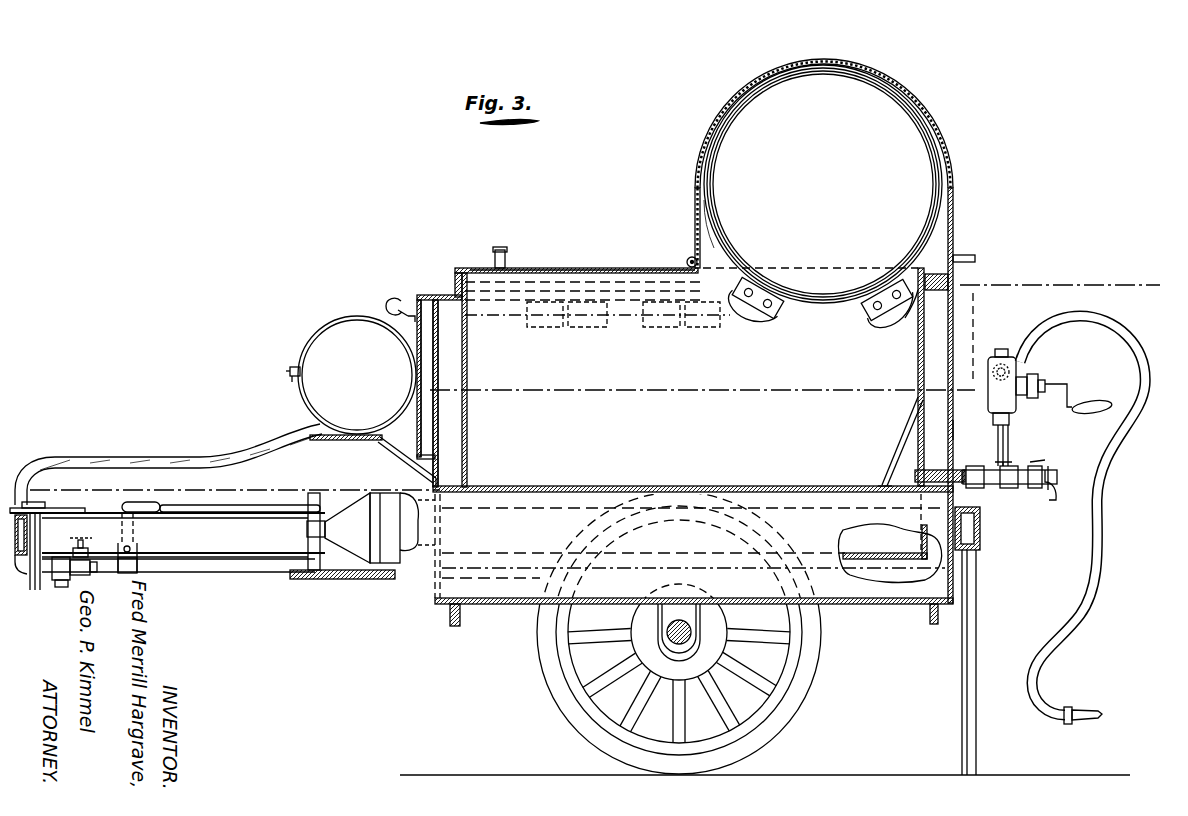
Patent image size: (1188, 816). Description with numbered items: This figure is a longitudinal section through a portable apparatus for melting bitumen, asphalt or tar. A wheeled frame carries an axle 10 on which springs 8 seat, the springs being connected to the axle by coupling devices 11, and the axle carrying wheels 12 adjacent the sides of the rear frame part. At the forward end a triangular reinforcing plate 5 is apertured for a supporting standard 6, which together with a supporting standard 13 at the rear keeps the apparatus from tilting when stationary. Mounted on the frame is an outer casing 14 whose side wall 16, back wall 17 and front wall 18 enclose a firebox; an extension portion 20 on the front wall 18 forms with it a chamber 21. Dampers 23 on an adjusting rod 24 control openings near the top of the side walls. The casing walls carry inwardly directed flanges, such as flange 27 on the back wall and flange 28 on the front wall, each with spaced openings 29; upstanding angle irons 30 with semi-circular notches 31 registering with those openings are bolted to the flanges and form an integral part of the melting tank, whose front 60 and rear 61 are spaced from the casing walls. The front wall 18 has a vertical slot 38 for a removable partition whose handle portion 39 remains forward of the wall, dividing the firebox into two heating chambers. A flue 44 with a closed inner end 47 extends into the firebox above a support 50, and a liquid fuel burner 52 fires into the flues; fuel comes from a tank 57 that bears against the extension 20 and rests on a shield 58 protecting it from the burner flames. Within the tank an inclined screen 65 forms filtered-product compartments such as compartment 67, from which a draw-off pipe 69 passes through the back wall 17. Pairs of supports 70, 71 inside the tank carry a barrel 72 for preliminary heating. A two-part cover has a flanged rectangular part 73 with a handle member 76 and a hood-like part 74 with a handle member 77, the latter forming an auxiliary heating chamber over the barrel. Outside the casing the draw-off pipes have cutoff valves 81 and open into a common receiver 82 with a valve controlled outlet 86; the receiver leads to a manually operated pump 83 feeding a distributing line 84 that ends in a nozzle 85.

The reinforcing plate 5 is at (18, 478).
The supporting standard 6 is at (40, 537).
The springs 8 is at (652, 625).
The axle 10 is at (679, 686).
The coupling devices 11 is at (666, 638).
The wheels 12 is at (810, 673).
The supporting standard 13 is at (978, 611).
The outer casing 14 is at (955, 331).
The side wall 16 is at (710, 243).
The back wall 17 is at (951, 432).
The front wall 18 is at (440, 421).
The extension portion 20 is at (422, 395).
The chamber 21 is at (425, 372).
The dampers 23 is at (556, 330).
The adjusting rod 24 is at (392, 300).
The flange 27 is at (932, 275).
The flange 28 is at (436, 297).
The openings 29 is at (905, 310).
The angle iron 30 is at (447, 295).
The semi-circular notches 31 is at (694, 632).
The slot 38 is at (440, 490).
The handle portion 39 is at (410, 550).
The flue 44 is at (883, 570).
The closed inner end 47 is at (981, 527).
The support 50 is at (333, 580).
The liquid fuel burner 52 is at (353, 513).
The tank 57 is at (328, 340).
The shield 58 is at (331, 442).
The front of tank 60 is at (467, 438).
The rear of tank 61 is at (918, 354).
The filtering screen 65 is at (897, 449).
The compartment 67 is at (898, 462).
The draw-off pipe 69 is at (936, 473).
The support 70 is at (756, 318).
The support 71 is at (893, 315).
The barrel 72 is at (926, 131).
The cover section 73 is at (561, 268).
The cover section 74 is at (955, 186).
The handle member 76 is at (499, 247).
The handle member 77 is at (962, 258).
The cutoff valve 81 is at (984, 484).
The common receiver 82 is at (1007, 442).
The pump 83 is at (1008, 386).
The distributing line 84 is at (1146, 364).
The nozzle 85 is at (1090, 710).
The valve controlled outlet 86 is at (1046, 471).